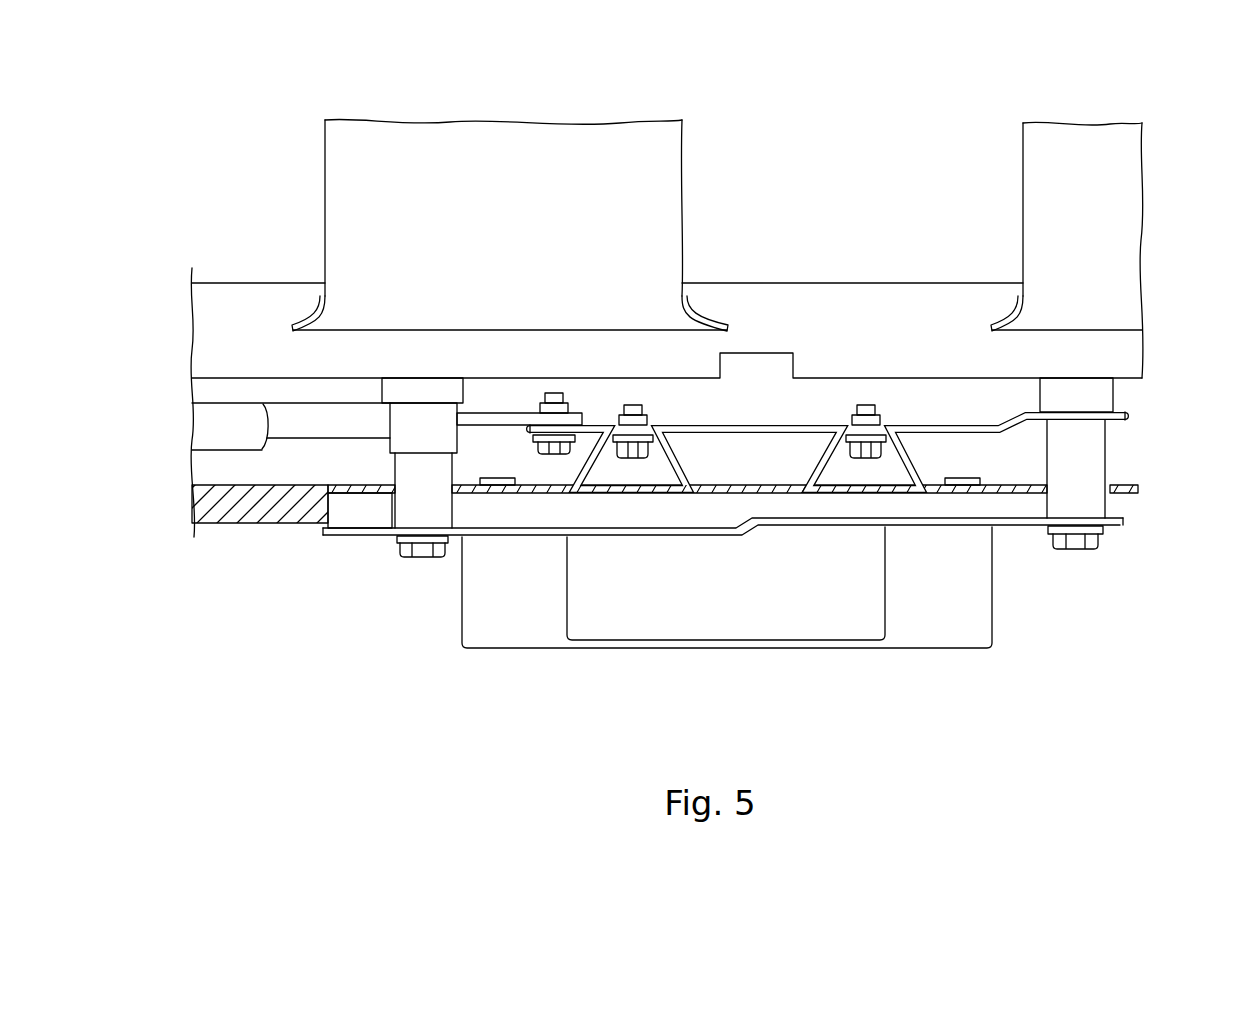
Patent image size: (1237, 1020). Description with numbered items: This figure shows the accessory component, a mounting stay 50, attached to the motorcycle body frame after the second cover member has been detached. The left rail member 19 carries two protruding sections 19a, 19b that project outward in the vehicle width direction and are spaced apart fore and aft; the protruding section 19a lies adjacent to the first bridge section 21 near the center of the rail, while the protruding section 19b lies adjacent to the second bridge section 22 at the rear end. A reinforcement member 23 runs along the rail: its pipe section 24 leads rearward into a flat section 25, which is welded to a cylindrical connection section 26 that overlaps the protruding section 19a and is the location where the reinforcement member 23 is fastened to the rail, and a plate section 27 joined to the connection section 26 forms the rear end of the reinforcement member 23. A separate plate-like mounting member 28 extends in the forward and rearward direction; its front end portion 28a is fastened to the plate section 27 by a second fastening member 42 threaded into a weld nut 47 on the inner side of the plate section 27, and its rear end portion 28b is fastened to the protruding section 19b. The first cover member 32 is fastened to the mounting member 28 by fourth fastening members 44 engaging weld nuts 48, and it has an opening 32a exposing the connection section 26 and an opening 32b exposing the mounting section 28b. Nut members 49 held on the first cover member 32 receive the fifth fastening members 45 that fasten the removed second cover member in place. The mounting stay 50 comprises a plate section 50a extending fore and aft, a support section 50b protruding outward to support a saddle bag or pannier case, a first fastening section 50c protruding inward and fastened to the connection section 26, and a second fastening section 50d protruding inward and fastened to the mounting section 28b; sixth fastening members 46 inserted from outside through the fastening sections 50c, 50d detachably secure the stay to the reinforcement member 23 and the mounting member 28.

The left rail member 19 is at (972, 297).
The protruding section 19a is at (410, 392).
The protruding section 19b is at (1067, 390).
The first bridge section 21 is at (505, 152).
The second bridge section 22 is at (1088, 158).
The reinforcement member 23 is at (290, 398).
The pipe section 24 is at (238, 413).
The flat section 25 is at (365, 412).
The connection section 26 is at (428, 427).
The plate section 27 is at (512, 413).
The mounting member 28 is at (752, 422).
The front end portion 28a is at (595, 427).
The rear end portion 28b is at (1087, 413).
The first cover member 32 is at (728, 498).
The opening 32a is at (387, 524).
The opening 32b is at (1110, 532).
The second fastening member 42 is at (547, 455).
The fourth fastening member 44 is at (627, 459).
The fifth fastening member 45 is at (744, 489).
The sixth fastening member 46 is at (417, 560).
The weld nut 47 is at (577, 407).
The weld nut 48 is at (660, 420).
The nut member 49 is at (500, 477).
The mounting stay 50 is at (948, 654).
The plate section 50a is at (1007, 530).
The support section 50b is at (918, 626).
The first fastening section 50c is at (423, 498).
The second fastening section 50d is at (1088, 458).